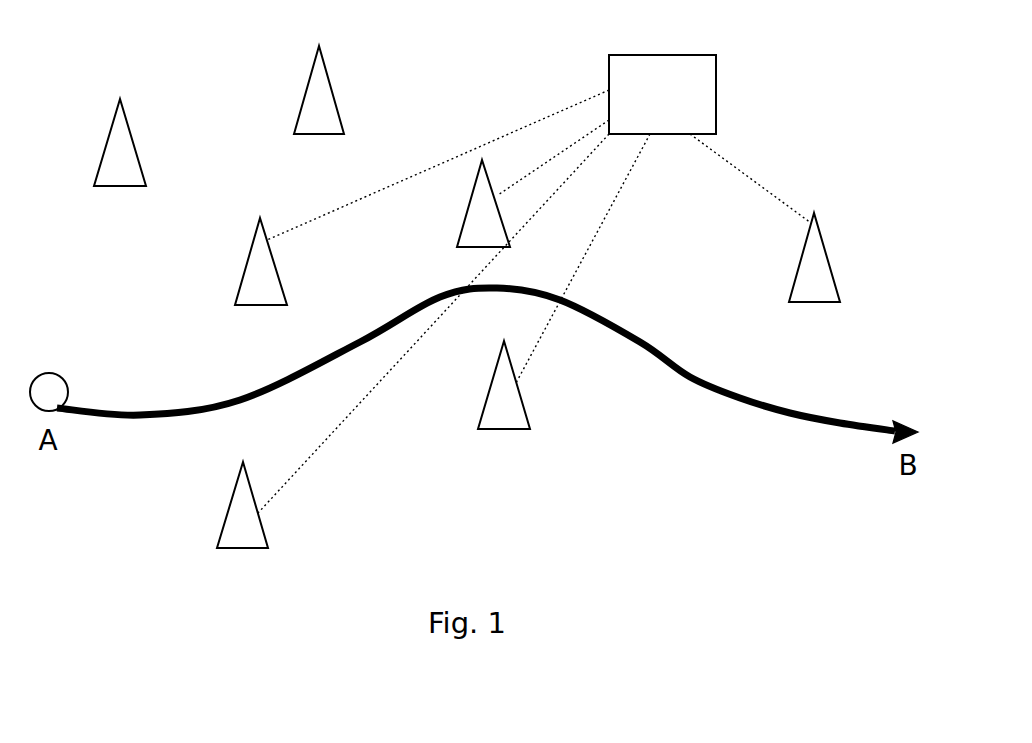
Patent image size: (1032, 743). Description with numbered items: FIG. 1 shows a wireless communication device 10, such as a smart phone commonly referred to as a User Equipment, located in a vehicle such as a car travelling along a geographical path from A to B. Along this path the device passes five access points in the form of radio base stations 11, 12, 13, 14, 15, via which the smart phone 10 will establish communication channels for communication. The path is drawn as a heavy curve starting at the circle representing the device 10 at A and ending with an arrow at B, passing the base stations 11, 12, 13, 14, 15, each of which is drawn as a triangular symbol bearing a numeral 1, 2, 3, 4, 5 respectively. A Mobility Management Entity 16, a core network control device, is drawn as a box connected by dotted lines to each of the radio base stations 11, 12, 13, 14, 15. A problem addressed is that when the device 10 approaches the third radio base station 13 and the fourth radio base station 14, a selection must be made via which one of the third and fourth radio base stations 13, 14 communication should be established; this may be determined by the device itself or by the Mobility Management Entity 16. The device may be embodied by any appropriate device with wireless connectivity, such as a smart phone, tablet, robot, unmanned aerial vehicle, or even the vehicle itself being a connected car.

The cell of first radio base station 1 is at (242, 505).
The cell of second radio base station 2 is at (261, 261).
The cell of third radio base station 3 is at (483, 203).
The cell of fourth radio base station 4 is at (504, 385).
The cell of fifth radio base station 5 is at (814, 257).
The wireless communication device 10 is at (47, 373).
The radio base station 11 is at (203, 497).
The radio base station 12 is at (222, 253).
The third radio base station 13 is at (445, 232).
The fourth radio base station 14 is at (546, 385).
The radio base station 15 is at (774, 251).
The Mobility Management Entity 16 is at (662, 94).